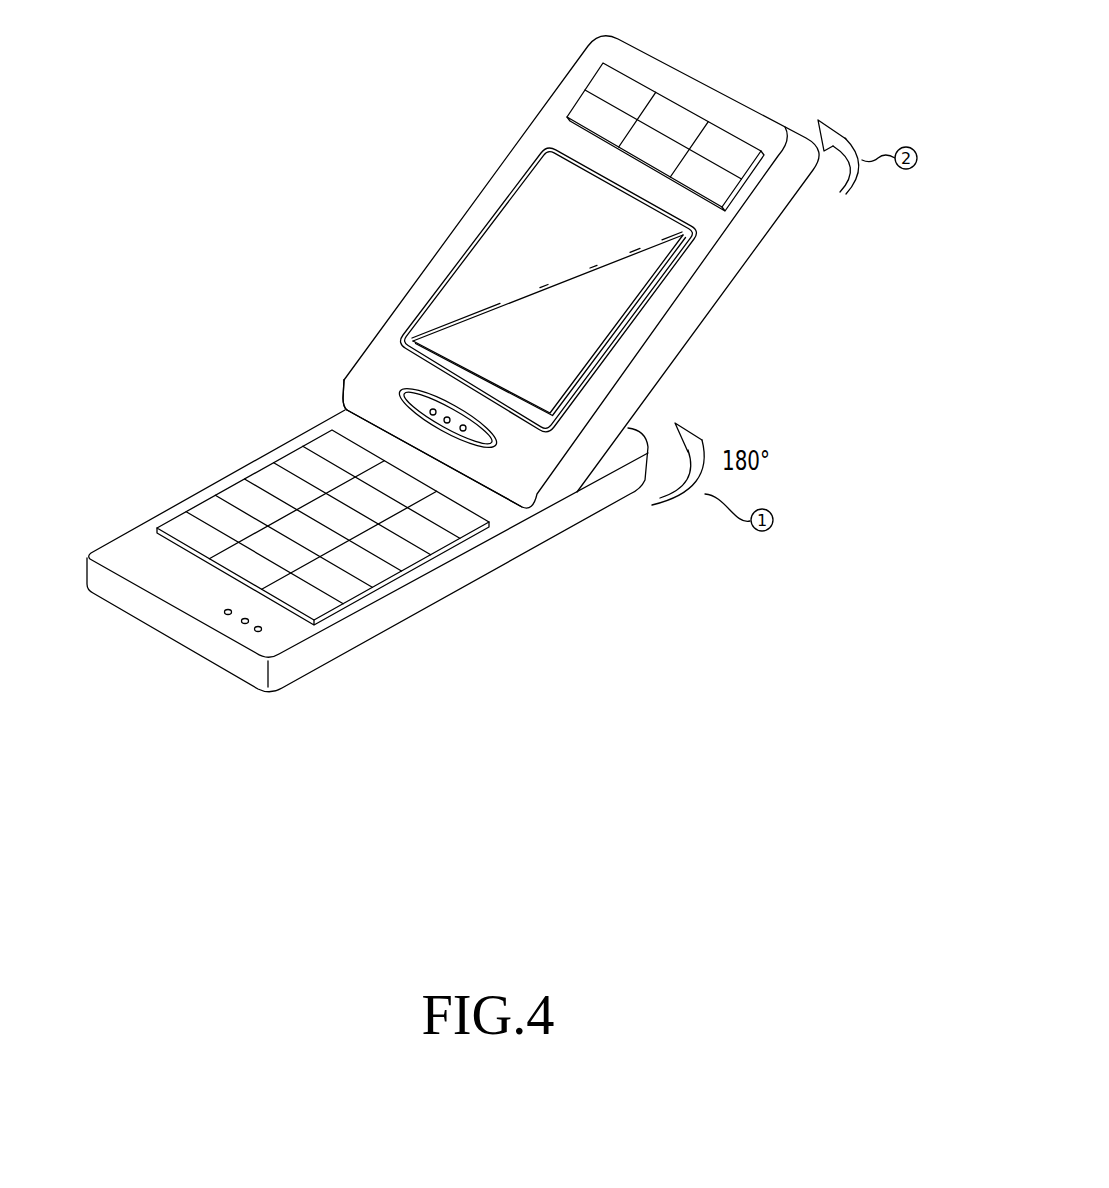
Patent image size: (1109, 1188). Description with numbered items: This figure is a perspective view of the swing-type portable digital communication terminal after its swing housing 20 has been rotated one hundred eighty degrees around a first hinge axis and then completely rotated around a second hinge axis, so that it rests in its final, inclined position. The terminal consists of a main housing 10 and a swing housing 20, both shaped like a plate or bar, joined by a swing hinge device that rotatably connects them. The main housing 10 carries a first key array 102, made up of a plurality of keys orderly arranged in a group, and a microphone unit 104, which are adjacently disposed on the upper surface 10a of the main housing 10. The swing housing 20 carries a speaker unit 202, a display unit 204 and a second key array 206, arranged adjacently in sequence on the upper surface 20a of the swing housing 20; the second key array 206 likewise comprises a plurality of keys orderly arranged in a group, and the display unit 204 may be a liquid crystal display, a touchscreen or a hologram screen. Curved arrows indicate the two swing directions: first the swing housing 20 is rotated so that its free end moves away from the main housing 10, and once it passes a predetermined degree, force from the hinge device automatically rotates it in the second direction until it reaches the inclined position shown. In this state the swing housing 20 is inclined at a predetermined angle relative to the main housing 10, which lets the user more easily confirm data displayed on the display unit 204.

The main housing 10 is at (157, 645).
The upper surface of the main housing 10a is at (137, 547).
The first key array 102 is at (372, 568).
The microphone unit 104 is at (257, 632).
The swing housing 20 is at (425, 232).
The upper surface of the swing housing 20a is at (363, 390).
The speaker unit 202 is at (445, 403).
The display unit 204 is at (600, 302).
The second key array 206 is at (683, 118).